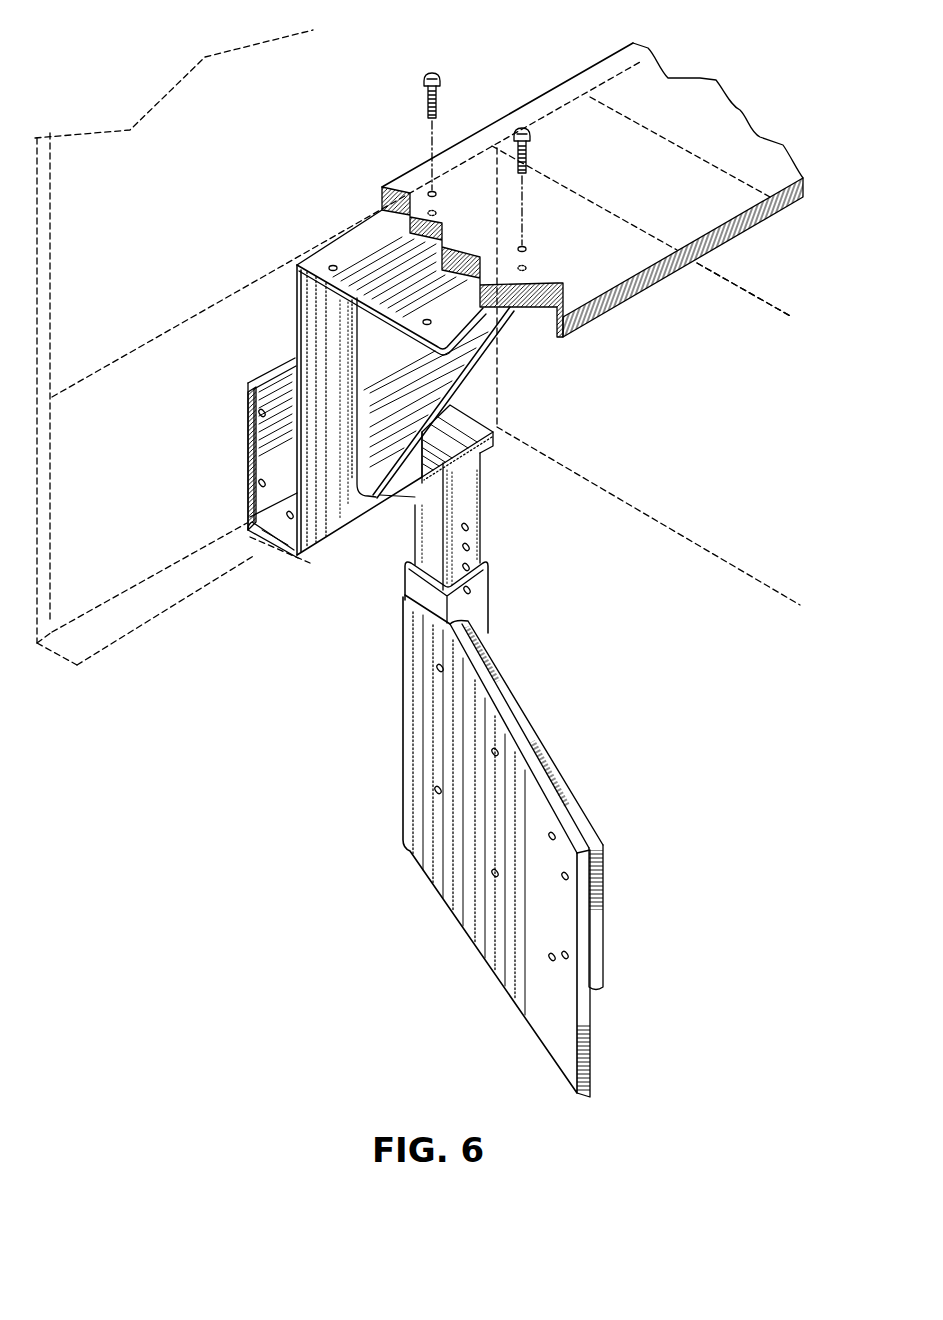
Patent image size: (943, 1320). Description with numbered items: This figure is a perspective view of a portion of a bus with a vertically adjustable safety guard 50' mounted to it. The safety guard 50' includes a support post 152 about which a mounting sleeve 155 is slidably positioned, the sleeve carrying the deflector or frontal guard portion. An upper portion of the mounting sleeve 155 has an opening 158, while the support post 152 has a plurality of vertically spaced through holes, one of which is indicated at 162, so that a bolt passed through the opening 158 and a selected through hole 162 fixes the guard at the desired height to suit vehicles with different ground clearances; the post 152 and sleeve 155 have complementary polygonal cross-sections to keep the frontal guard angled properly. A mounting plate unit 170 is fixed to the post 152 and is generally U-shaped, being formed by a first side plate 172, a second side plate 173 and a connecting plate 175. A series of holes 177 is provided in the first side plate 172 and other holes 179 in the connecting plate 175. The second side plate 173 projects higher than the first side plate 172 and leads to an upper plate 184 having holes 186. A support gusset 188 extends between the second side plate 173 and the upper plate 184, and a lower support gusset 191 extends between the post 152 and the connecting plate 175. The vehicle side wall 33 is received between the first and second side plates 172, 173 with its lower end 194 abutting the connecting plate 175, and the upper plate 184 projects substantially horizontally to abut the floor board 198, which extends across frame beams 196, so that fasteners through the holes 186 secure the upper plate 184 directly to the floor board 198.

The side wall 33 is at (93, 595).
The safety guard 50' is at (440, 846).
The support post 152 is at (464, 505).
The mounting sleeve 155 is at (476, 623).
The opening 158 is at (474, 590).
The through hole 162 is at (468, 546).
The mounting plate unit 170 is at (220, 475).
The first side plate 172 is at (270, 401).
The second side plate 173 is at (310, 305).
The connecting plate 175 is at (274, 530).
The holes 177 is at (258, 414).
The holes 179 is at (289, 520).
The upper plate 184 is at (377, 234).
The holes 186 is at (333, 265).
The support gusset 188 is at (433, 377).
The lower support gusset 191 is at (415, 497).
The lower end 194 is at (150, 597).
The frame beam 196 is at (788, 244).
The floor board 198 is at (707, 118).